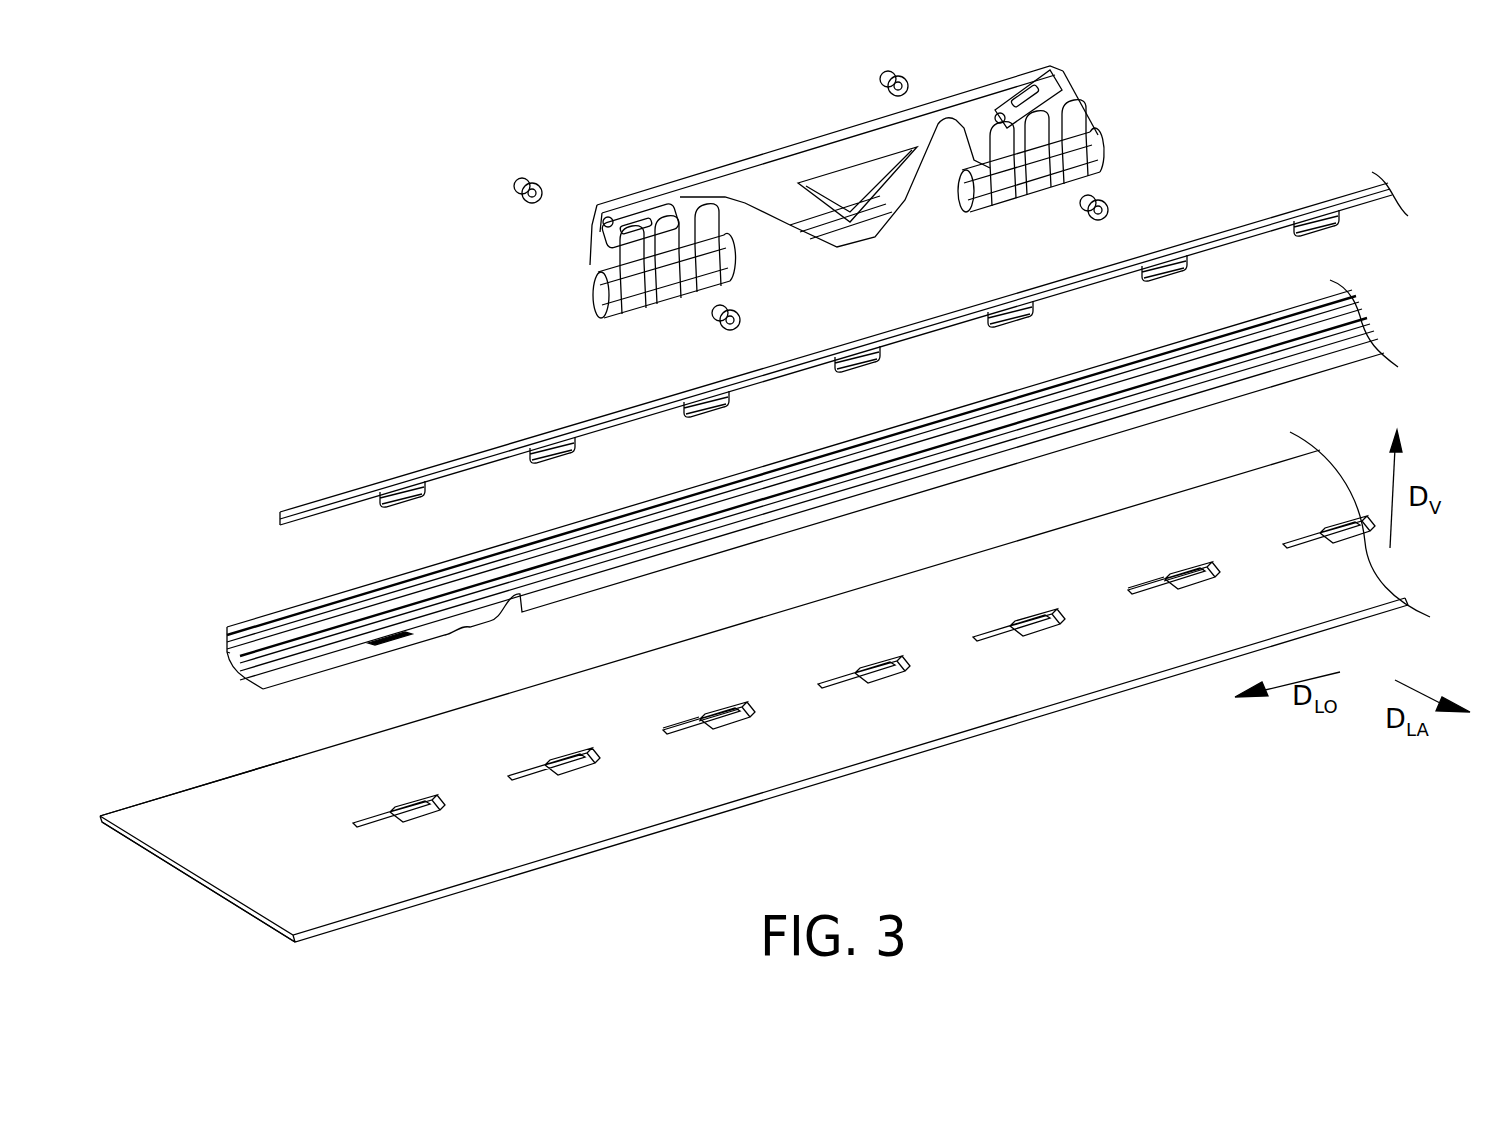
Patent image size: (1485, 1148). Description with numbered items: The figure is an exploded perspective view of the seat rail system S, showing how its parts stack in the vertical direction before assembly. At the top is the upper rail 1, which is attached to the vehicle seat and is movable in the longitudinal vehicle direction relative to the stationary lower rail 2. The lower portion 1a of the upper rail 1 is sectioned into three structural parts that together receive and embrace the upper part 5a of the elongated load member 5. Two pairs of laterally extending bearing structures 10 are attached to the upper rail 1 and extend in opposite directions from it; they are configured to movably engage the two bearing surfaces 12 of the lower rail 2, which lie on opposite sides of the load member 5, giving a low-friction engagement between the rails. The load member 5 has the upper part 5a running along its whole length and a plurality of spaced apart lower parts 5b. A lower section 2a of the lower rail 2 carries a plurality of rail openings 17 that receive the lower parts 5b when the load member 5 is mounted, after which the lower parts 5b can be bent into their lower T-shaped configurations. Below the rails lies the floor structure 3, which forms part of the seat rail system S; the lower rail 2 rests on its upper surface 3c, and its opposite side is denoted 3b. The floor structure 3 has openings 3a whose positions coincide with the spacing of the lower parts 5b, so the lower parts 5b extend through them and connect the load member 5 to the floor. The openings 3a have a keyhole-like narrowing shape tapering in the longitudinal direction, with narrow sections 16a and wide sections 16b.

The seat rail system S is at (372, 156).
The upper rail 1 is at (835, 158).
The lower portion of the upper rail 1a is at (1135, 132).
The bearing structures 10 is at (880, 76).
The load member 5 is at (1232, 232).
The upper part of the load member 5a is at (1322, 202).
The lower parts of the load member 5b is at (405, 525).
The lower rail 2 is at (290, 632).
The lower section of the lower rail 2a is at (262, 688).
The bearing surfaces 12 is at (228, 654).
The rail openings 17 is at (390, 648).
The floor structure 3 is at (520, 850).
The openings of the floor structure 3a is at (430, 805).
The plate front edge 3b is at (185, 900).
The upper surface of the floor structure 3c is at (165, 788).
The narrow sections 16a is at (690, 755).
The wide sections 16b is at (737, 740).